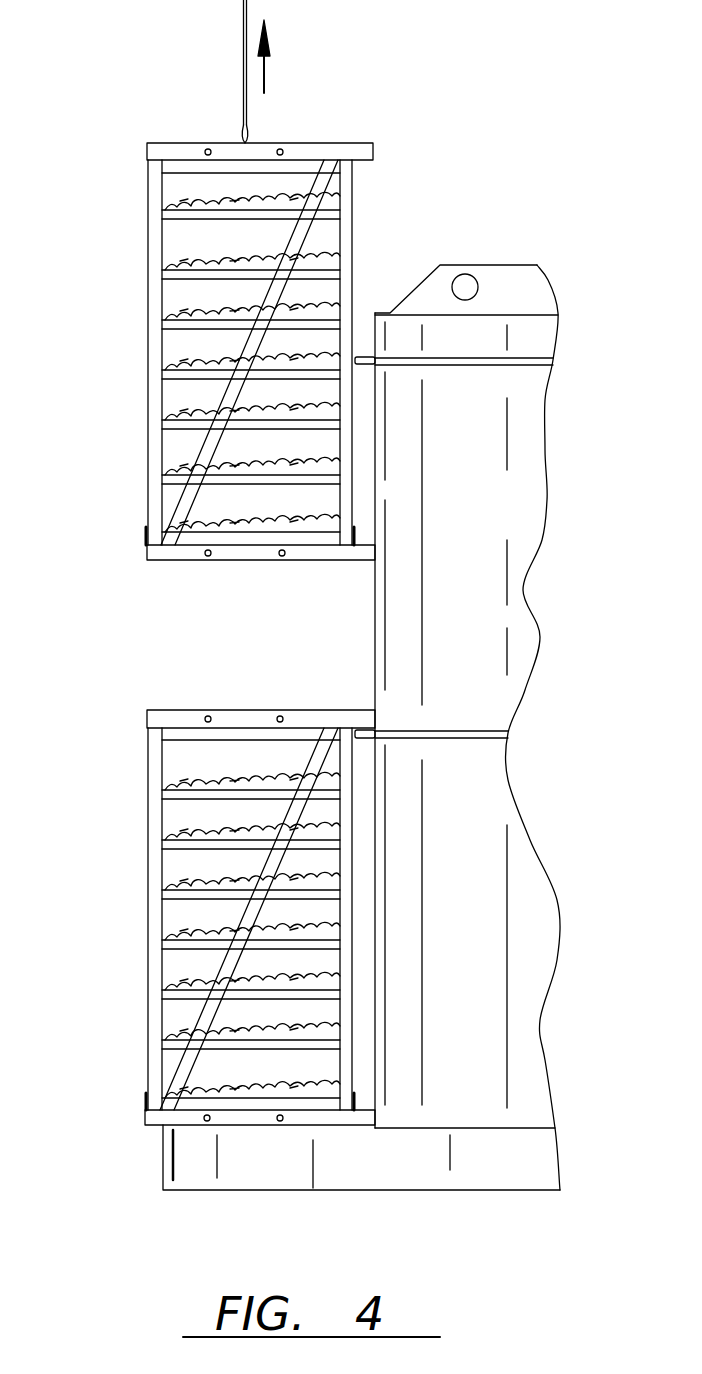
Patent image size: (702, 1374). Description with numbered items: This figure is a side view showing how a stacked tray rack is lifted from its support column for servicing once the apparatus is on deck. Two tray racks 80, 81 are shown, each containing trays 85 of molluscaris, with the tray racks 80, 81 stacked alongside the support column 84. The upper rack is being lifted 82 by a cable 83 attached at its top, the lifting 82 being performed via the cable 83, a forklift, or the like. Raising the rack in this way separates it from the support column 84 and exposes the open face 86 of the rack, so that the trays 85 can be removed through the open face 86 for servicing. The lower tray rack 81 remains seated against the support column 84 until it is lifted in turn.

The tray rack 80 is at (256, 385).
The tray rack 81 is at (148, 810).
The lifting 82 is at (330, 85).
The cable 83 is at (243, 55).
The support column 84 is at (476, 850).
The trays 85 is at (263, 520).
The open face 86 is at (352, 222).